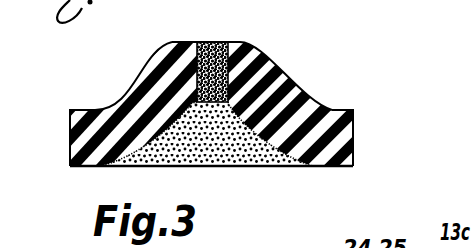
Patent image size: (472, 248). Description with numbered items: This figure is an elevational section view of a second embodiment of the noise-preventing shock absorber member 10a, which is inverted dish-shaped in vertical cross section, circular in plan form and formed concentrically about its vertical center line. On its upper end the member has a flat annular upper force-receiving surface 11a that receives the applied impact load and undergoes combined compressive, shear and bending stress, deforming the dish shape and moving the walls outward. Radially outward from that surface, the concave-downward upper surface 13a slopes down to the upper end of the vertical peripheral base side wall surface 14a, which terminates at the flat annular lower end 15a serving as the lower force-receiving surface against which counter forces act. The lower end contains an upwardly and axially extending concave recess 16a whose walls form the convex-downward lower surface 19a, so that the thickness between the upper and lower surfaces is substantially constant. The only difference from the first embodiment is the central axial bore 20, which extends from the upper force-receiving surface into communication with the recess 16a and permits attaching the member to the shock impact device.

The shock absorber member 10a is at (111, 100).
The upper force-receiving surface 11a is at (240, 42).
The upper surface 13a is at (293, 86).
The peripheral base side wall surface 14a is at (353, 141).
The lower end 15a is at (340, 166).
The concave recess 16a is at (262, 156).
The lower surface 19a is at (206, 134).
The central axial bore 20 is at (211, 42).